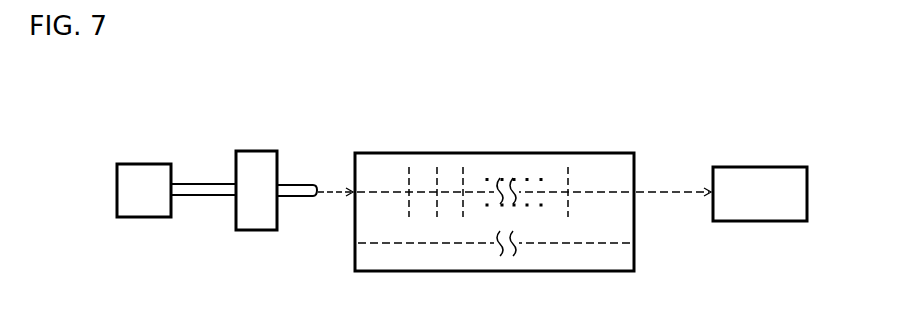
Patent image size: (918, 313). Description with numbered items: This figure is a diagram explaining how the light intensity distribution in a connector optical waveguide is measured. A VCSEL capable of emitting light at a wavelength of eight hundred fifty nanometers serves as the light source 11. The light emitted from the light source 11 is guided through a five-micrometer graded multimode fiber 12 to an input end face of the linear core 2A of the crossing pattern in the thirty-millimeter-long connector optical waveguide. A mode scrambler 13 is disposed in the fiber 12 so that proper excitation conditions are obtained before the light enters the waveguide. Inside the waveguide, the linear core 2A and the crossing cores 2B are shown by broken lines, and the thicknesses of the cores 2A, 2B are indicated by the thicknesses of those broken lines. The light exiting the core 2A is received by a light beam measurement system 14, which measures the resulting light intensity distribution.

The light source 11 is at (142, 178).
The graded multimode fiber 12 is at (202, 180).
The mode scrambler 13 is at (260, 162).
The linear core 2A is at (383, 192).
The core 2B is at (463, 182).
The light beam measurement system 14 is at (760, 180).